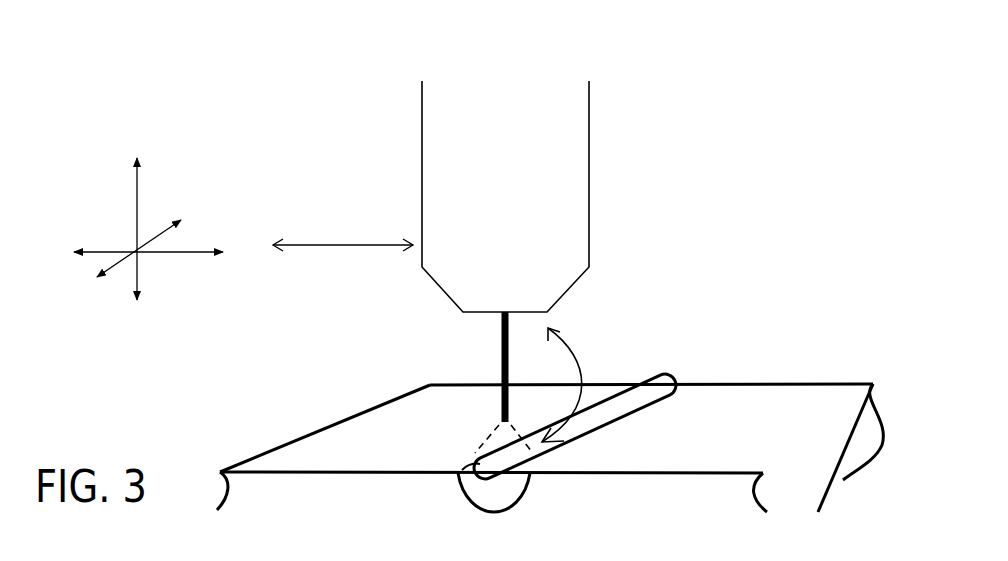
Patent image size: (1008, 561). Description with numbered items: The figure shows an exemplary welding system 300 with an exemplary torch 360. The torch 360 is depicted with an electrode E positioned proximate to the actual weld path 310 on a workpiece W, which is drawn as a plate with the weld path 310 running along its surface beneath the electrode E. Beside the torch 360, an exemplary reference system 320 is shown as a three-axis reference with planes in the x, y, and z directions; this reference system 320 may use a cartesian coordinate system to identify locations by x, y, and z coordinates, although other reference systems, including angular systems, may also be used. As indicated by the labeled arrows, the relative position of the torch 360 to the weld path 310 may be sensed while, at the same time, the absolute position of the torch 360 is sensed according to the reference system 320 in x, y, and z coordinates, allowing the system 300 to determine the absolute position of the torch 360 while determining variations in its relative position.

The system 300 is at (186, 46).
The reference system 320 is at (108, 194).
The torch 360 is at (437, 127).
The actual weld path 310 is at (648, 383).
The electrode E is at (501, 347).
The workpiece W is at (848, 458).